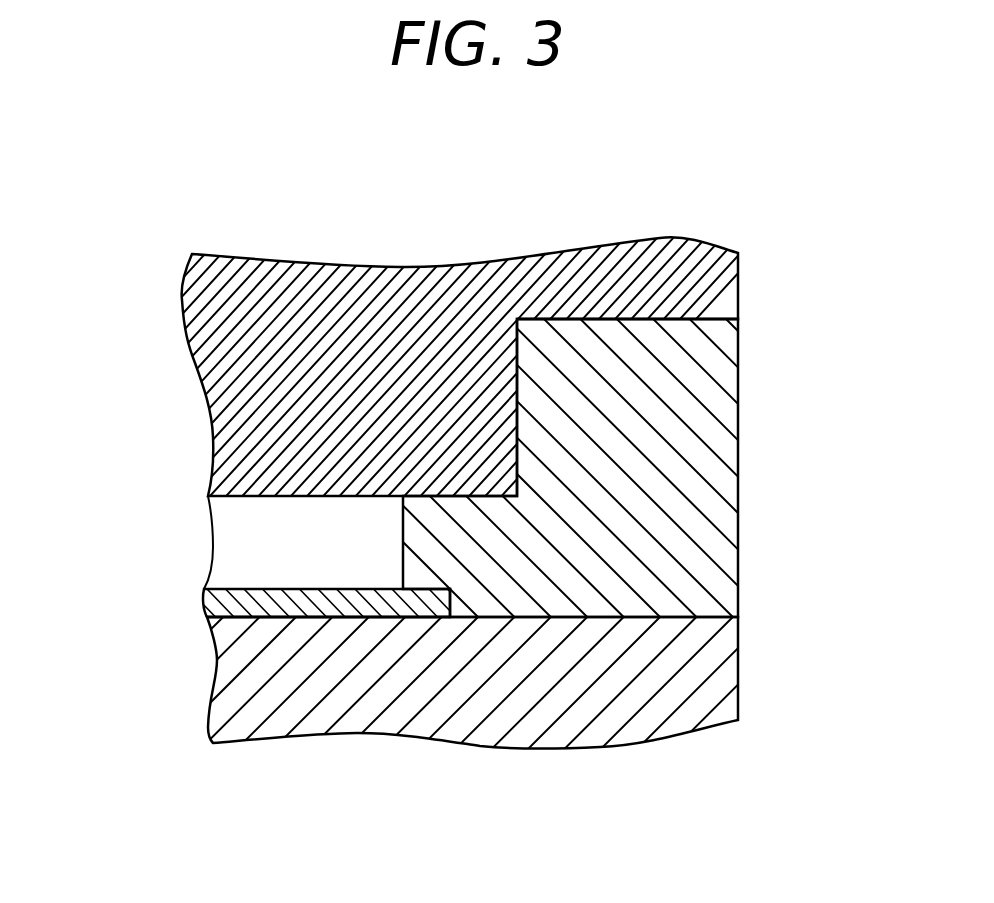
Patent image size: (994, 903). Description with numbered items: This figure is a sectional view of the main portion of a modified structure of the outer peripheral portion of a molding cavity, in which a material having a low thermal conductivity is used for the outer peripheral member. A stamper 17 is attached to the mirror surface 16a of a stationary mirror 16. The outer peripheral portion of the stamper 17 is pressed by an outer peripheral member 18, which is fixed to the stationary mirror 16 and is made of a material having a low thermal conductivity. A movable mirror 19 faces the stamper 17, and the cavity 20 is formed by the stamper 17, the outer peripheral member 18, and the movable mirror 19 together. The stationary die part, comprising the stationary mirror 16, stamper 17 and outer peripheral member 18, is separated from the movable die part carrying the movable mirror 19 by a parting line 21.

The stationary mirror 16 is at (563, 737).
The mirror surface 16a is at (350, 617).
The stamper 17 is at (258, 590).
The outer peripheral member 18 is at (715, 513).
The movable mirror 19 is at (458, 292).
The cavity 20 is at (260, 496).
The parting line 21 is at (648, 332).